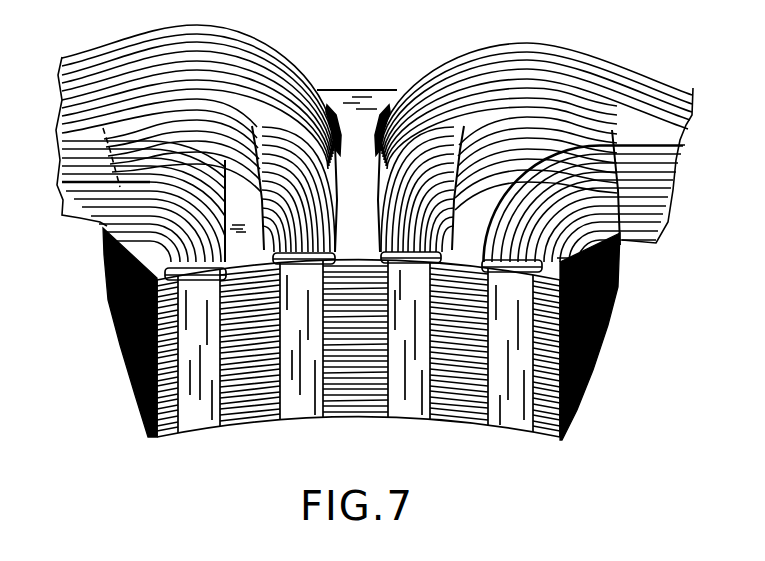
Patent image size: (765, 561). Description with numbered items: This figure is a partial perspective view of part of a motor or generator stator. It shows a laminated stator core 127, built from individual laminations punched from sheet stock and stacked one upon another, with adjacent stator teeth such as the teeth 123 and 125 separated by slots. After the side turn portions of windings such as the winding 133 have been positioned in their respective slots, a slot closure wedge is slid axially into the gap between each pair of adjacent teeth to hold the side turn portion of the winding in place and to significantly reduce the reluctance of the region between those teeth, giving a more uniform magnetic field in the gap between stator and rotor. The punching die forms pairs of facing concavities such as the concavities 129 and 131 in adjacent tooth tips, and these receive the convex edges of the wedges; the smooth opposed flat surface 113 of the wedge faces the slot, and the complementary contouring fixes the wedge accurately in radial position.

The elongated surface 113 is at (413, 397).
The stator tooth 123 is at (468, 408).
The stator tooth 125 is at (353, 405).
The stator core 127 is at (598, 350).
The concavity 129 is at (373, 252).
The concavity 131 is at (432, 240).
The winding 133 is at (517, 43).